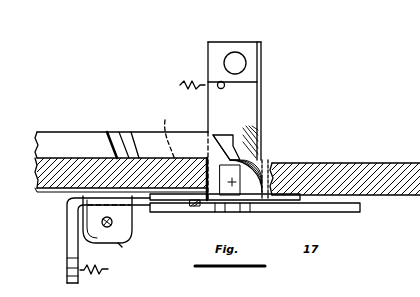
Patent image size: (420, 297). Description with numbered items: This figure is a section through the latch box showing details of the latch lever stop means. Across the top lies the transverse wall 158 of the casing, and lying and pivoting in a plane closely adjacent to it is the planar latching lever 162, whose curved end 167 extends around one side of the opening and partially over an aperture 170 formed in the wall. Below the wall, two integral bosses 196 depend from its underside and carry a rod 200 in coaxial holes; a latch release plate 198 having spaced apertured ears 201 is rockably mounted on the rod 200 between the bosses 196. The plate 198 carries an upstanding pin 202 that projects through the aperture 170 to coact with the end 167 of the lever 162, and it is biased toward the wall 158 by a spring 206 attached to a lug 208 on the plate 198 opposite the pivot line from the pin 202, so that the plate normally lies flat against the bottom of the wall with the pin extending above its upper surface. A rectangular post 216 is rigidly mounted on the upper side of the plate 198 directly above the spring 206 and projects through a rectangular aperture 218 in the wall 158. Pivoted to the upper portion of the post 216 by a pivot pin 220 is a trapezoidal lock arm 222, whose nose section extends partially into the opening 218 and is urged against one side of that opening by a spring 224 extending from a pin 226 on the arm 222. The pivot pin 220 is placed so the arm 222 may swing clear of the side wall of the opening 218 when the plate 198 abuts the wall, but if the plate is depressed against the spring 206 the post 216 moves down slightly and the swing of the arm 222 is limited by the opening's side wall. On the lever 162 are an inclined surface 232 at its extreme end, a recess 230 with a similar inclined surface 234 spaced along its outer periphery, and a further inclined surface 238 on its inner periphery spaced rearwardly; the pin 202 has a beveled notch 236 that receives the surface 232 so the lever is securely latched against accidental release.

The transverse wall 158 is at (40, 189).
The latching lever 162 is at (57, 136).
The end of lever 167 is at (80, 135).
The aperture 170 is at (274, 168).
The bosses 196 is at (133, 228).
The latch release plate 198 is at (356, 210).
The rod 200 is at (112, 222).
The apertured ears 201 is at (121, 246).
The pin 202 is at (266, 142).
The spring 206 is at (108, 270).
The lug 208 is at (67, 232).
The rectangular post 216 is at (262, 55).
The rectangular aperture 218 is at (300, 170).
The pivot pin 220 is at (234, 52).
The lock arm 222 is at (258, 95).
The spring 224 is at (183, 80).
The pin 226 is at (261, 82).
The recess 230 is at (140, 144).
The inclined surface 232 is at (224, 135).
The inclined surface 234 is at (114, 135).
The notch 236 is at (216, 205).
The inclined surface 238 is at (168, 134).